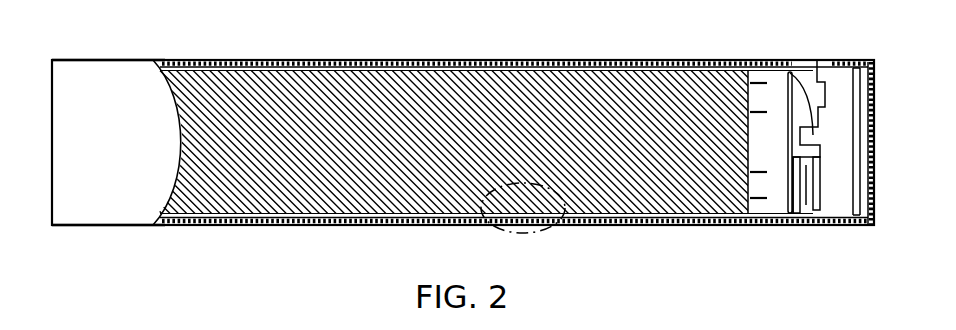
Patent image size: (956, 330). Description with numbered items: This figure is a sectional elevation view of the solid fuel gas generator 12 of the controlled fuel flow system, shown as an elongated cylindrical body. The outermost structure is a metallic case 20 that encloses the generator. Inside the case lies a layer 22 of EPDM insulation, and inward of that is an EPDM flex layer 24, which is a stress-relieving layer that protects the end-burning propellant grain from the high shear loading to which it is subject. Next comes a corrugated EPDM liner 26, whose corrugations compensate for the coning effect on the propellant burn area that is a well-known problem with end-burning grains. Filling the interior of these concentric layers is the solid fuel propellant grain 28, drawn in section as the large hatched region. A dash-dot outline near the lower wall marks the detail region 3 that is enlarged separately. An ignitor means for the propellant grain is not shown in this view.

The solid fuel gas generator 12 is at (472, 156).
The metallic case 20 is at (623, 62).
The layer of EPDM insulation 22 is at (567, 62).
The EPDM flex layer 24 is at (498, 62).
The corrugated EPDM liner 26 is at (345, 61).
The solid fuel propellant grain 28 is at (309, 88).
The detail region of FIG. 3 is at (535, 226).